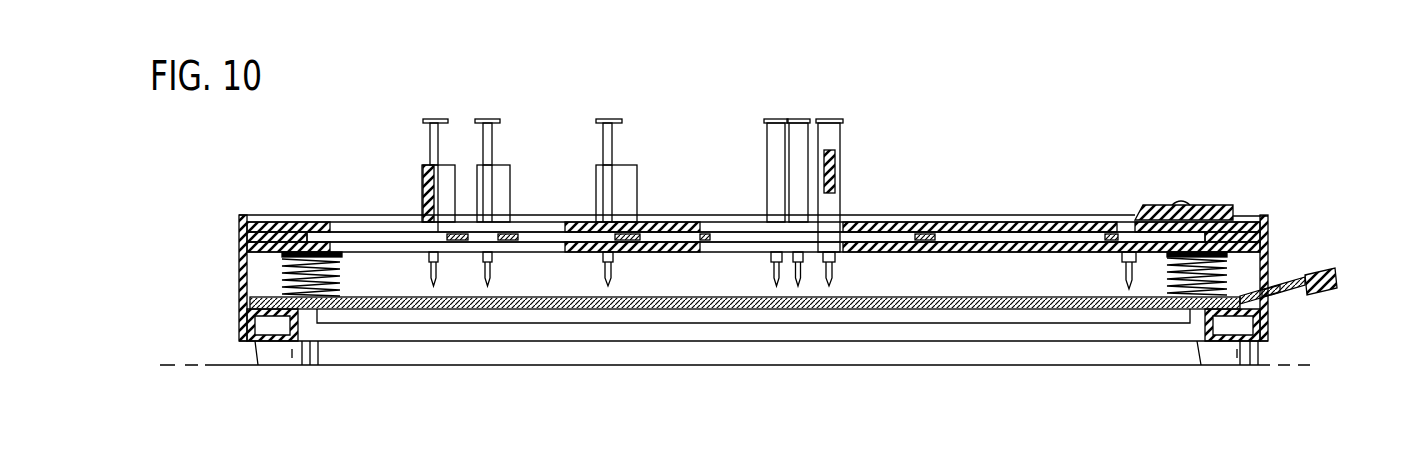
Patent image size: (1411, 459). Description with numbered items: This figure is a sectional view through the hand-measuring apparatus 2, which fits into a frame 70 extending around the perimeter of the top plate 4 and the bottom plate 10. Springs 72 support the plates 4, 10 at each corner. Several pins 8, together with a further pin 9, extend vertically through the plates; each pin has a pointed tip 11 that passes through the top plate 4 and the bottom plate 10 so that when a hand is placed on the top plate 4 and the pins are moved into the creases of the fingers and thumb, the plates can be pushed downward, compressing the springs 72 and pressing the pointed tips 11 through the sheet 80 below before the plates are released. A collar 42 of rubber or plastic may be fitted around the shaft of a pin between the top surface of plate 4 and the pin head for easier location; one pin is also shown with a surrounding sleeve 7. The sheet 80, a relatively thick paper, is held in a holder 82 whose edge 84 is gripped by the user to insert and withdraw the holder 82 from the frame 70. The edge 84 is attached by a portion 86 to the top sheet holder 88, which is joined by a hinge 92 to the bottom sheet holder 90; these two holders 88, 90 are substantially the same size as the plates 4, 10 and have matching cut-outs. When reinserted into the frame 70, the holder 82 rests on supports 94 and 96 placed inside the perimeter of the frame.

The apparatus 2 is at (1285, 232).
The top plate 4 is at (1035, 228).
The plunger housing 7 is at (630, 173).
The pin 8 is at (610, 138).
The pin 9 is at (1181, 205).
The bottom plate 10 is at (967, 246).
The pointed tip 11 is at (488, 281).
The collar 42 is at (836, 201).
The frame 70 is at (1268, 251).
The spring 72 is at (280, 278).
The sheet 80 is at (422, 312).
The holder 82 is at (1340, 307).
The edge 84 is at (1338, 282).
The portion 86 is at (1277, 298).
The top sheet holder 88 is at (1003, 303).
The bottom sheet holder 90 is at (587, 312).
The hinge 92 is at (250, 309).
The support 94 is at (247, 337).
The support 96 is at (1235, 315).